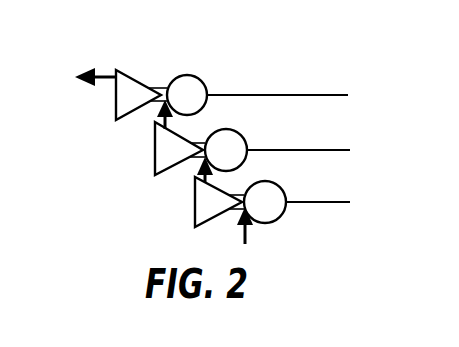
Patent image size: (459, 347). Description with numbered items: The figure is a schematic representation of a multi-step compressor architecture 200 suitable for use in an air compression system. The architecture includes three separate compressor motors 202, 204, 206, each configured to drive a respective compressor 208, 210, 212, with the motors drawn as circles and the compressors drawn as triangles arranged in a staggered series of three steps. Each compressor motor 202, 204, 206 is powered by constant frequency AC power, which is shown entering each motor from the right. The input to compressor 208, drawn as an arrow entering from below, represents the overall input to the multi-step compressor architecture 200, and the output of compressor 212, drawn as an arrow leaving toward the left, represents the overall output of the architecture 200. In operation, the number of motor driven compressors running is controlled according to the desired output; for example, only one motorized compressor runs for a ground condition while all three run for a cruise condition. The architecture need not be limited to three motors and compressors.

The multi-step compressor architecture 200 is at (214, 123).
The compressor motor 202 is at (275, 183).
The compressor motor 204 is at (240, 134).
The compressor motor 206 is at (197, 76).
The compressor 208 is at (195, 205).
The compressor 210 is at (155, 152).
The compressor 212 is at (115, 103).